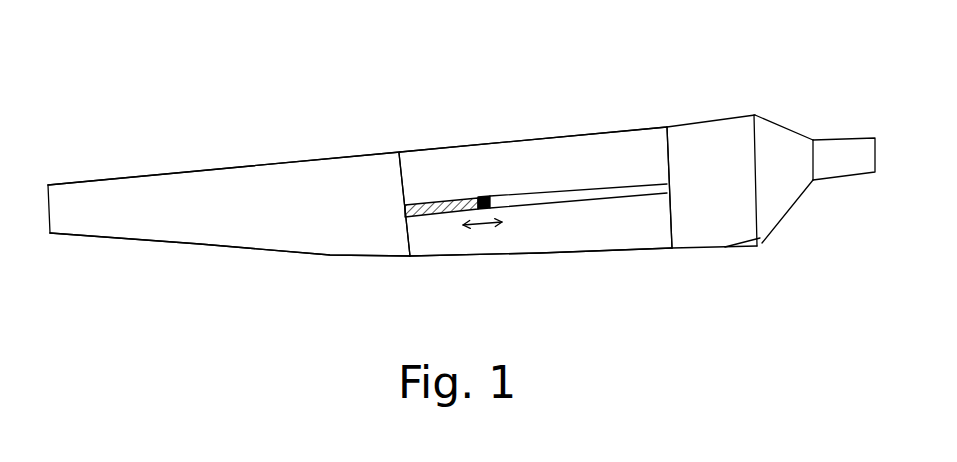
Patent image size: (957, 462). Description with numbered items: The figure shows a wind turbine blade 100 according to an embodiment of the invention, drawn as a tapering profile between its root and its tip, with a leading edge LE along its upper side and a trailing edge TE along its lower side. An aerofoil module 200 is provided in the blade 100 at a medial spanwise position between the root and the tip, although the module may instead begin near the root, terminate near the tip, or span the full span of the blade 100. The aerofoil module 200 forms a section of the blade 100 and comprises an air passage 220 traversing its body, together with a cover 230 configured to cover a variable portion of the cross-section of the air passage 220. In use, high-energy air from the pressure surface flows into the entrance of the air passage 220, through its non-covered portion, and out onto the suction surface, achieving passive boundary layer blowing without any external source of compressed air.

The blade 100 is at (330, 52).
The aerofoil module 200 is at (673, 258).
The air passage 220 is at (510, 203).
The cover 230 is at (435, 205).
The leading edge LE is at (318, 150).
The trailing edge TE is at (318, 255).